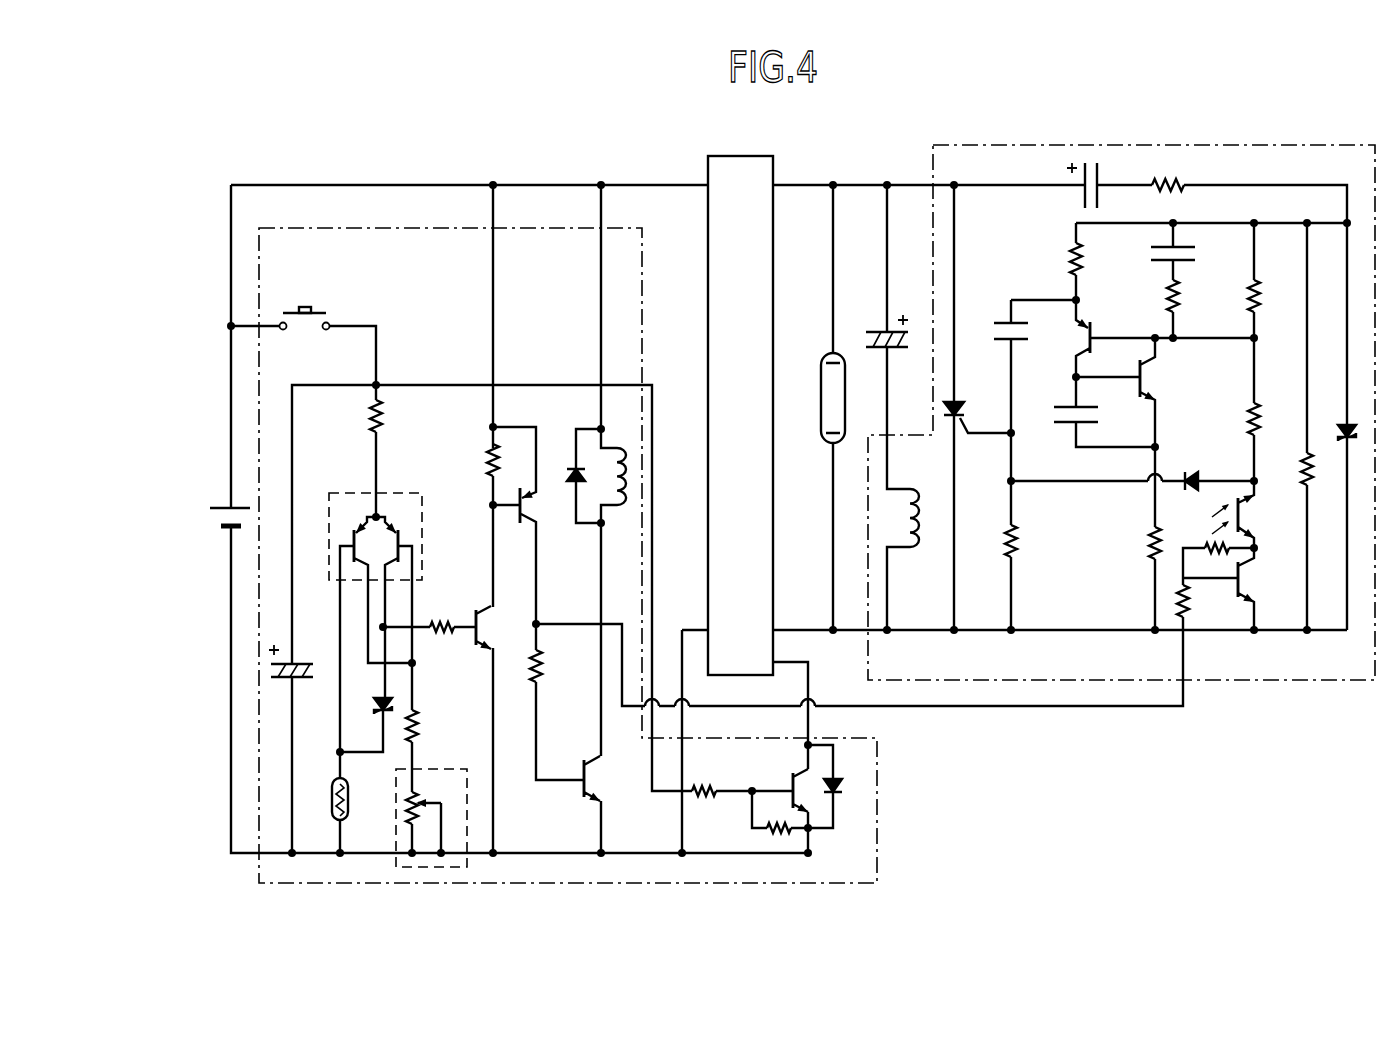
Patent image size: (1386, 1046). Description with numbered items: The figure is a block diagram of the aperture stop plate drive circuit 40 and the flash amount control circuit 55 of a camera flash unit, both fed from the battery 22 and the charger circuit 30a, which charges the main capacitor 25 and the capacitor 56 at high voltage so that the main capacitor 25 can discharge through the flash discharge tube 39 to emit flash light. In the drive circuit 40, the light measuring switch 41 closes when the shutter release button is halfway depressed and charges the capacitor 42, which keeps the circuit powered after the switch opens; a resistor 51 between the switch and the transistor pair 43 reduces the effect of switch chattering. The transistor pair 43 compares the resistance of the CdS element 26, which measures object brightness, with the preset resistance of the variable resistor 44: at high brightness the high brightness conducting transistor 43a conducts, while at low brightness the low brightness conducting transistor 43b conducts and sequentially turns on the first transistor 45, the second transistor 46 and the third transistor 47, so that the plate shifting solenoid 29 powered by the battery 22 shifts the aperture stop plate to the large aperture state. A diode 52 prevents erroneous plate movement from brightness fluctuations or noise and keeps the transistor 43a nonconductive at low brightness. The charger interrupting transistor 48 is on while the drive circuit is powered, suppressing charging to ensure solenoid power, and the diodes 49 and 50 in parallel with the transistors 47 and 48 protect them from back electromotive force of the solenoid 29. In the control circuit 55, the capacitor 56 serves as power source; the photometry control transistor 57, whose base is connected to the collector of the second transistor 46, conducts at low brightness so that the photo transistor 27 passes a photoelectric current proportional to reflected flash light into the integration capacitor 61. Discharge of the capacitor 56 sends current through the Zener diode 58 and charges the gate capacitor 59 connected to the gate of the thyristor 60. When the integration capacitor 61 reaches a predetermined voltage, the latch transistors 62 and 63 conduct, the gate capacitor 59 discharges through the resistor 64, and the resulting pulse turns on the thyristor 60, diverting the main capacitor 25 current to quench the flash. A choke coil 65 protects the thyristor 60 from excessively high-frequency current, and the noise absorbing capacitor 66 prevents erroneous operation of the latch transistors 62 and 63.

The battery 22 is at (219, 506).
The main capacitor 25 is at (882, 332).
The CdS element 26 is at (333, 795).
The photo transistor 27 is at (1255, 518).
The plate shifting solenoid 29 is at (606, 507).
The charger circuit 30a is at (735, 155).
The flash discharge tube 39 is at (826, 367).
The aperture stop plate drive circuit 40 is at (878, 790).
The light measuring switch 41 is at (326, 314).
The capacitor 42 is at (297, 663).
The transistor pair 43 is at (415, 492).
The high brightness conducting transistor 43a is at (352, 532).
The low brightness conducting transistor 43b is at (399, 530).
The variable resistor 44 is at (467, 812).
The first transistor 45 is at (474, 614).
The second transistor 46 is at (514, 522).
The third transistor 47 is at (582, 772).
The charger interrupting transistor 48 is at (791, 775).
The diode 49 is at (573, 468).
The diode 50 is at (840, 782).
The resistor 51 is at (374, 420).
The diode 52 is at (383, 714).
The flash amount control circuit 55 is at (1288, 680).
The capacitor 56 is at (1083, 193).
The photometry control transistor 57 is at (1252, 588).
The Zener diode 58 is at (1343, 424).
The gate capacitor 59 is at (1010, 323).
The thyristor 60 is at (960, 403).
The integration capacitor 61 is at (1185, 262).
The latch transistor 62 is at (1092, 334).
The latch transistor 63 is at (1140, 388).
The resistor 64 is at (1020, 540).
The choke coil 65 is at (900, 548).
The noise absorbing capacitor 66 is at (1065, 424).